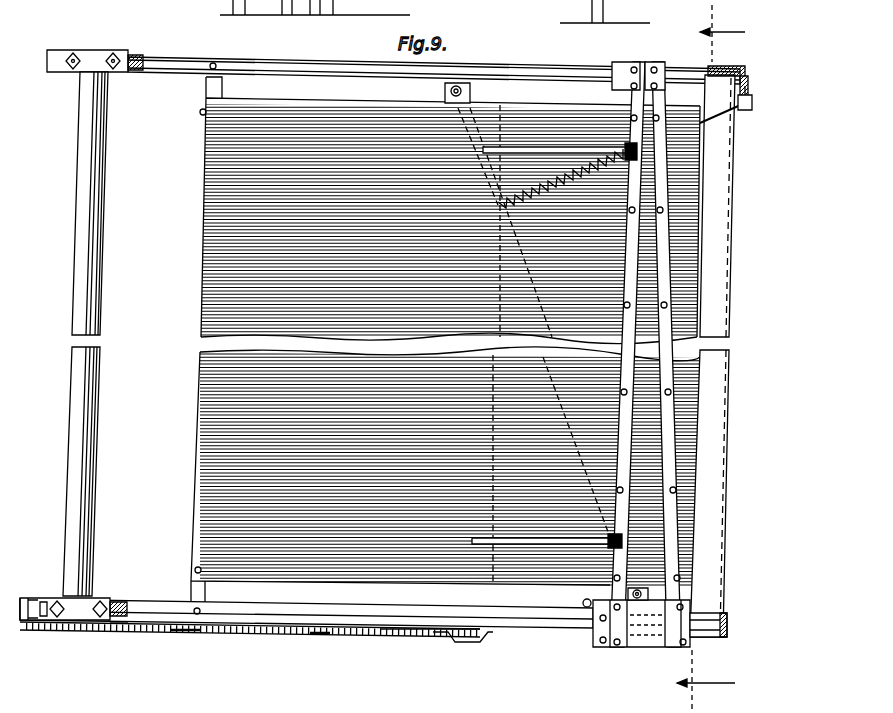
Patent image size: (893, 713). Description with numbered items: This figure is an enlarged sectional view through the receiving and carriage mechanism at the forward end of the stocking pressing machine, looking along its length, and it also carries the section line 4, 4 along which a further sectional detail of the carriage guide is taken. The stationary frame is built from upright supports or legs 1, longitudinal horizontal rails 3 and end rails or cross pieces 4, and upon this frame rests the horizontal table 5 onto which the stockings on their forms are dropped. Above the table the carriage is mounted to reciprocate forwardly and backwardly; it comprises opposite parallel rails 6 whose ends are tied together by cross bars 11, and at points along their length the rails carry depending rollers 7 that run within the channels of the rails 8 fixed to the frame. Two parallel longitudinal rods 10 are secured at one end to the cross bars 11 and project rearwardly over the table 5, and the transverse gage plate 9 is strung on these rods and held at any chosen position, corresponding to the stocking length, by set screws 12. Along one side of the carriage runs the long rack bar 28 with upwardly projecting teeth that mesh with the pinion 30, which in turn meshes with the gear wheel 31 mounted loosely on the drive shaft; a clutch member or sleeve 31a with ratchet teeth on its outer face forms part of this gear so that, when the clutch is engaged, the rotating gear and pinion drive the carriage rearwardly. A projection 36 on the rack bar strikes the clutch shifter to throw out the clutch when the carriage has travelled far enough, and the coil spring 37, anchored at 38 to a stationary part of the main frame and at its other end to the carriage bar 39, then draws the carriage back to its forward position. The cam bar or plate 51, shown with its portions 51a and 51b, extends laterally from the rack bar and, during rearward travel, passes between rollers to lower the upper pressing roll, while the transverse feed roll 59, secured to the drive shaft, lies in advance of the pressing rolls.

The upright supports or legs 1 is at (740, 68).
The longitudinal horizontal rails 3 is at (136, 57).
The end rails or cross pieces 4 is at (750, 432).
The horizontal table 5 is at (445, 340).
The carriage rails 6 is at (622, 63).
The depending rollers 7 is at (582, 630).
The channel rails 8 is at (322, 63).
The gage plate 9 is at (612, 398).
The longitudinal rods 10 is at (600, 150).
The cross bars 11 is at (636, 545).
The set screws 12 is at (614, 158).
The rack bar 28 is at (405, 636).
The pinion 30 is at (45, 625).
The gear wheel 31 is at (84, 623).
The clutch member or sleeve 31a is at (112, 628).
The projection 36 is at (466, 642).
The coil spring 37 is at (566, 197).
The spring anchorage 38 is at (745, 112).
The carriage bar 39 is at (500, 263).
The cam bar or plate 51 is at (258, 636).
The rack section 51a is at (178, 637).
The rack section 51b is at (320, 639).
The feed roll 59 is at (74, 243).